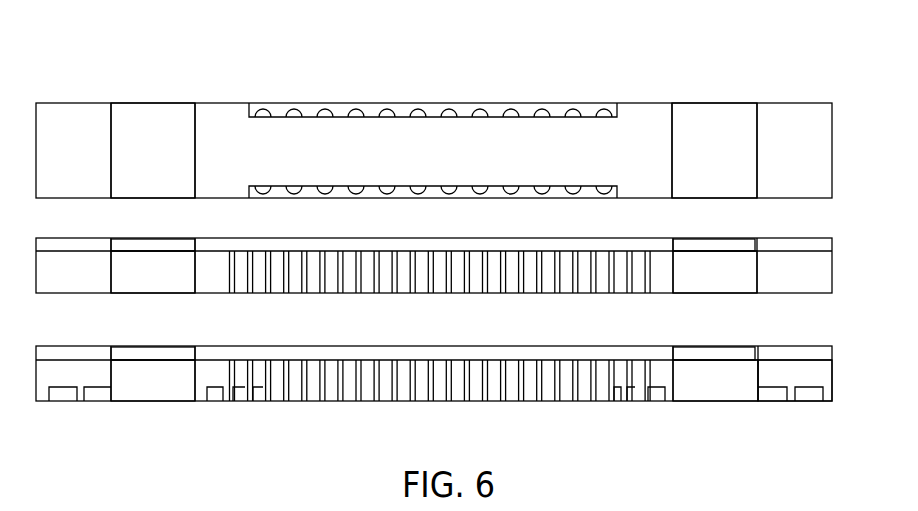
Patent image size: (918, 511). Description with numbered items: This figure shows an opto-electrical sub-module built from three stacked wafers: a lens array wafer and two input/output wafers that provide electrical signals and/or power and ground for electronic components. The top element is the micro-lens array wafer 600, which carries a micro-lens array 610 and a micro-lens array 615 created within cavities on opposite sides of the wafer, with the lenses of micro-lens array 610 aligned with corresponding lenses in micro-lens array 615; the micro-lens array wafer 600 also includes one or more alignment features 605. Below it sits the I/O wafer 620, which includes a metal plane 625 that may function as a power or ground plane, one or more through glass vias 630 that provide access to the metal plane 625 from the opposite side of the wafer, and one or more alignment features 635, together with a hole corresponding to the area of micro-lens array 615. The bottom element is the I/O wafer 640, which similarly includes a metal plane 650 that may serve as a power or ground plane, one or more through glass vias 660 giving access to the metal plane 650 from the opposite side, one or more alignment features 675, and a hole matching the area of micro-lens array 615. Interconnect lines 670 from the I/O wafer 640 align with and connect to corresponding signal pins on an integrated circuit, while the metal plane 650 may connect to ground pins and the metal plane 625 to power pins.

The micro-lens array wafer 600 is at (767, 112).
The alignment features 605 is at (132, 115).
The micro-lens array 610 is at (371, 110).
The micro-lens array 615 is at (493, 194).
The I/O wafer 620 is at (772, 262).
The metal plane 625 is at (708, 241).
The through glass vias 630 is at (675, 297).
The alignment features 635 is at (140, 263).
The I/O wafer 640 is at (800, 368).
The metal plane 650 is at (699, 348).
The through glass vias 660 is at (342, 360).
The interconnect lines 670 is at (663, 400).
The alignment features 675 is at (135, 389).